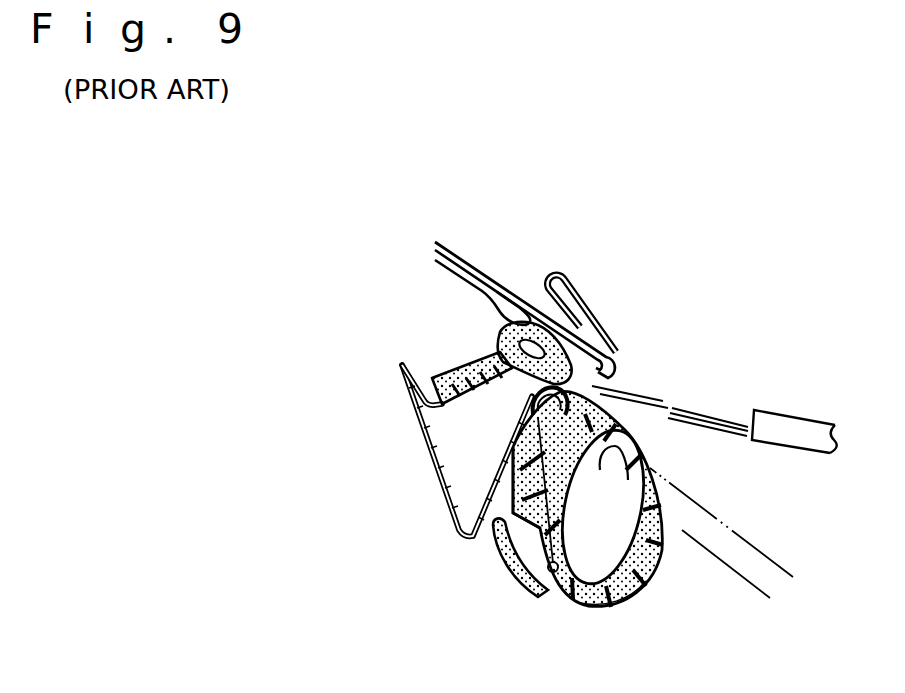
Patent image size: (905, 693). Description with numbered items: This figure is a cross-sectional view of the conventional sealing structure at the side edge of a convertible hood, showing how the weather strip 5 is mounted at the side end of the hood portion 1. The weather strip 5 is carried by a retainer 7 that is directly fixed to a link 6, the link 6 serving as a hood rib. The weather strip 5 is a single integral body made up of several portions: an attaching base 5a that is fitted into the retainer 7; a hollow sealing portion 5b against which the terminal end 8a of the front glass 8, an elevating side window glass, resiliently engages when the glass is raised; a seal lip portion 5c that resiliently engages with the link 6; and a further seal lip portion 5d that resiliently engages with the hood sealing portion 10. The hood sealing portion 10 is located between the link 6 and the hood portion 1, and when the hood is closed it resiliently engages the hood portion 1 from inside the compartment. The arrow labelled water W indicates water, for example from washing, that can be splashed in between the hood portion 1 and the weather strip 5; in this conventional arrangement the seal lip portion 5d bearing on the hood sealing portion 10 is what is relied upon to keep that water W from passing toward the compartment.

The hood portion 1 is at (478, 270).
The weather strip 5 is at (645, 418).
The attaching base 5a is at (545, 445).
The hollow sealing portion 5b is at (653, 582).
The seal lip portion 5c is at (493, 557).
The seal lip portion 5d is at (620, 353).
The link 6 is at (420, 433).
The retainer 7 is at (513, 463).
The front glass 8 is at (718, 540).
The terminal end of the front glass 8a is at (650, 468).
The hood sealing portion 10 is at (500, 357).
The water W is at (809, 437).